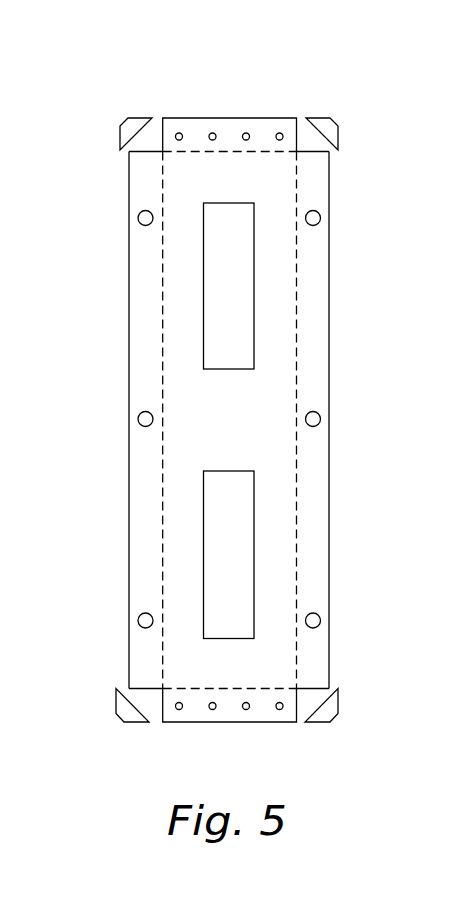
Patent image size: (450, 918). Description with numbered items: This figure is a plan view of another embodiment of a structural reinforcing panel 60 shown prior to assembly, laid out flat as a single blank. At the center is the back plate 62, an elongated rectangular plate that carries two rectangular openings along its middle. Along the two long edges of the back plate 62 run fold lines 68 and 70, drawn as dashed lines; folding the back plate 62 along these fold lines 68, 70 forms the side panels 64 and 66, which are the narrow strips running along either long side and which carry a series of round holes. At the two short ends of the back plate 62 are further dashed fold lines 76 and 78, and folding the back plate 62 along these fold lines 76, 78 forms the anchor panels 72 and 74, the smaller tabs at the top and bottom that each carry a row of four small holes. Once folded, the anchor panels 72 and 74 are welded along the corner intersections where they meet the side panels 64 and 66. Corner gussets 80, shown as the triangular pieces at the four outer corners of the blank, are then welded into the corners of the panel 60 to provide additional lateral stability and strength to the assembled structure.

The structural reinforcing panel 60 is at (267, 68).
The back plate 62 is at (275, 495).
The side panel 64 is at (327, 193).
The side panel 66 is at (128, 377).
The fold line 68 is at (297, 283).
The fold line 70 is at (163, 573).
The anchor panel 72 is at (200, 118).
The anchor panel 74 is at (263, 722).
The fold line 76 is at (200, 153).
The fold line 78 is at (258, 688).
The corner gusset 80 is at (333, 133).